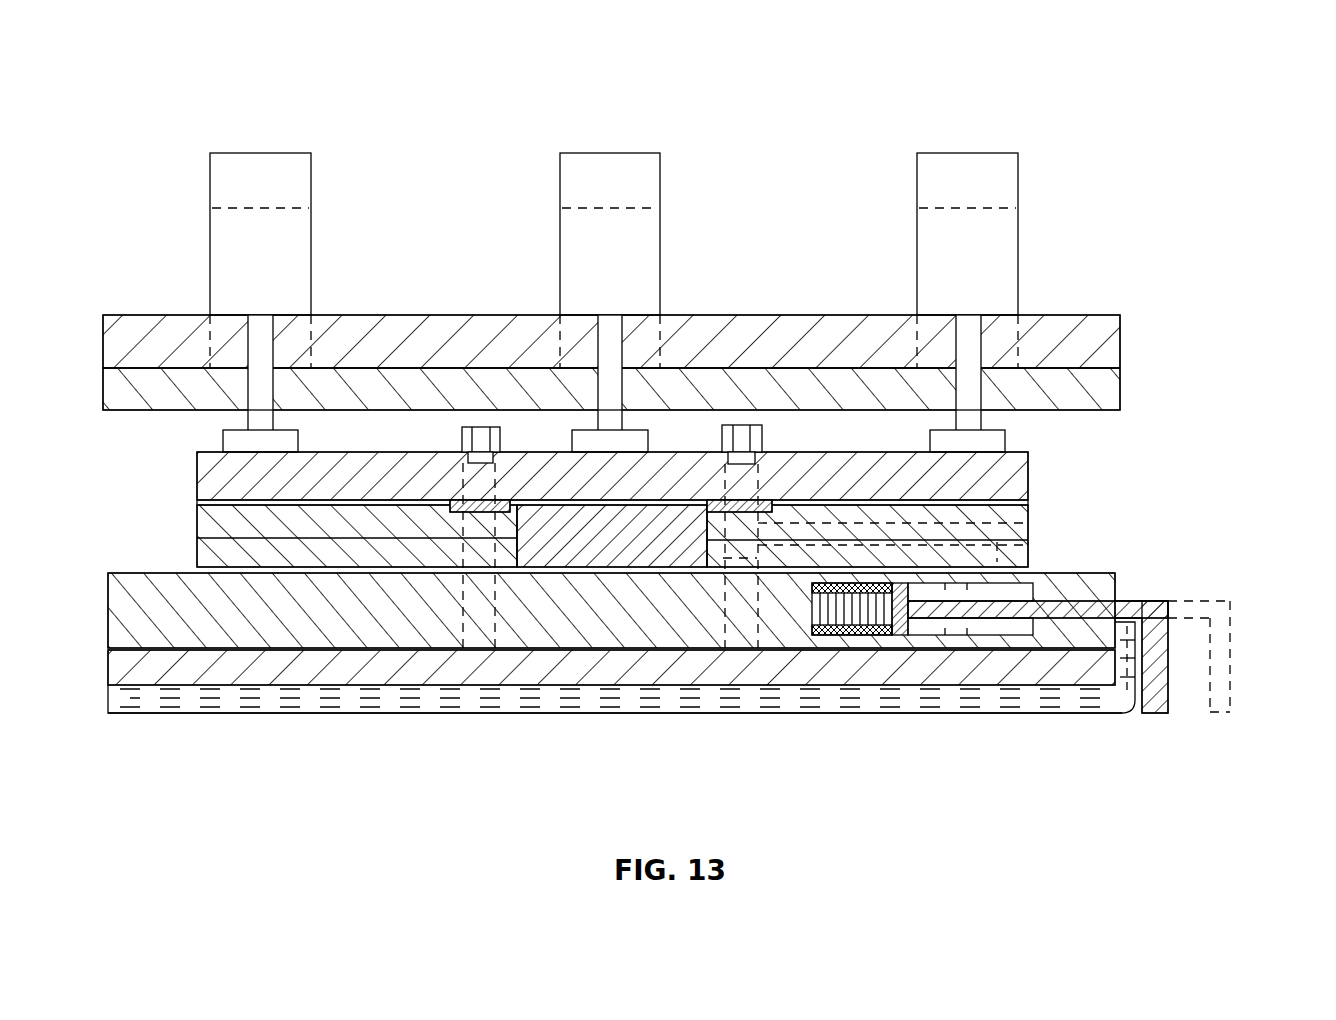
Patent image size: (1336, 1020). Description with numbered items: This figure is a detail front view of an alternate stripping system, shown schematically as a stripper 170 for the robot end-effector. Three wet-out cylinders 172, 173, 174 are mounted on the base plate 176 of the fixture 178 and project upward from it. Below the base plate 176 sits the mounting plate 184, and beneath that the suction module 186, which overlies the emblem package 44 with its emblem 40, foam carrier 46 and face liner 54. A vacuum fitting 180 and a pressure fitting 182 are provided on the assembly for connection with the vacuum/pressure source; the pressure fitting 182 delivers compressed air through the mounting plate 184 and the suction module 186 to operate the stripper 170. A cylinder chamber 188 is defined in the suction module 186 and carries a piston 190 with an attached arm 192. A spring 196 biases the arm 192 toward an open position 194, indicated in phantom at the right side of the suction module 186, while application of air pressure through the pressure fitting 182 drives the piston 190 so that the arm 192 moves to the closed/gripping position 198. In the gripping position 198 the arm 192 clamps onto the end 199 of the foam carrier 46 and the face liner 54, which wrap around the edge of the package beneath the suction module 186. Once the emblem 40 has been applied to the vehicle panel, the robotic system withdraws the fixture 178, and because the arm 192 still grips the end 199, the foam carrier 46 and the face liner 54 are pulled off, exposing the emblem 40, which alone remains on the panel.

The emblem 40 is at (285, 666).
The emblem package 44 is at (570, 718).
The foam carrier 46 is at (610, 705).
The face liner 54 is at (895, 713).
The stripper 170 is at (667, 517).
The wet-out cylinder 172 is at (262, 152).
The wet-out cylinder 173 is at (612, 152).
The wet-out cylinder 174 is at (968, 152).
The base plate 176 is at (1122, 350).
The fixture 178 is at (657, 256).
The vacuum fitting 180 is at (481, 422).
The pressure fitting 182 is at (741, 420).
The mounting plate 184 is at (196, 472).
The suction module 186 is at (108, 618).
The cylinder chamber 188 is at (990, 635).
The piston 190 is at (903, 580).
The arm 192 is at (1083, 605).
The open position 194 is at (1240, 624).
The spring 196 is at (863, 637).
The closed/gripping position 198 is at (1168, 657).
The end of the foam carrier 199 is at (1127, 672).